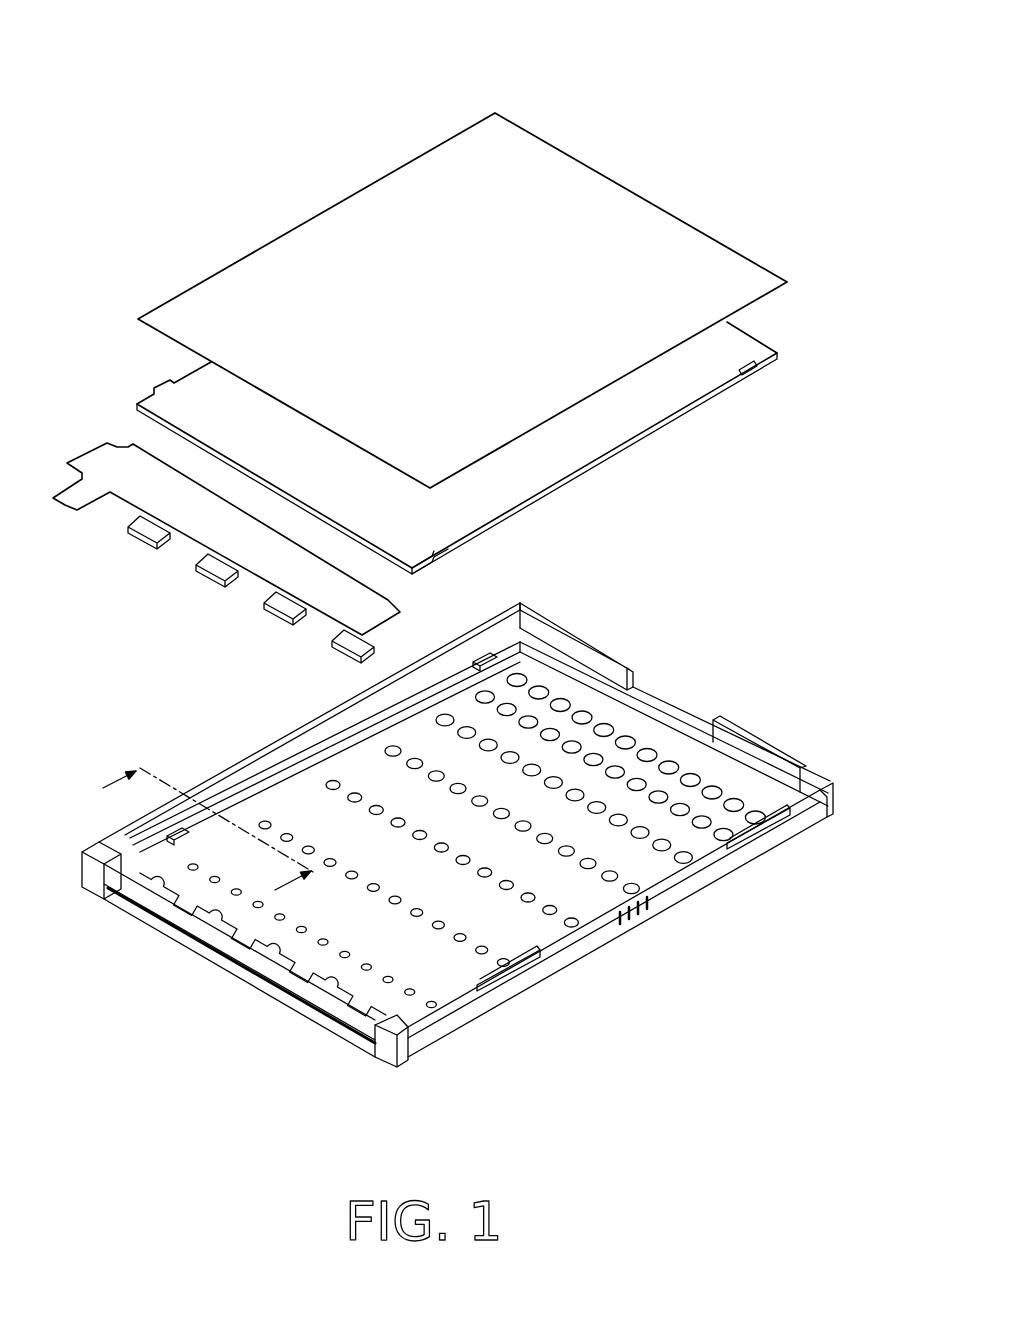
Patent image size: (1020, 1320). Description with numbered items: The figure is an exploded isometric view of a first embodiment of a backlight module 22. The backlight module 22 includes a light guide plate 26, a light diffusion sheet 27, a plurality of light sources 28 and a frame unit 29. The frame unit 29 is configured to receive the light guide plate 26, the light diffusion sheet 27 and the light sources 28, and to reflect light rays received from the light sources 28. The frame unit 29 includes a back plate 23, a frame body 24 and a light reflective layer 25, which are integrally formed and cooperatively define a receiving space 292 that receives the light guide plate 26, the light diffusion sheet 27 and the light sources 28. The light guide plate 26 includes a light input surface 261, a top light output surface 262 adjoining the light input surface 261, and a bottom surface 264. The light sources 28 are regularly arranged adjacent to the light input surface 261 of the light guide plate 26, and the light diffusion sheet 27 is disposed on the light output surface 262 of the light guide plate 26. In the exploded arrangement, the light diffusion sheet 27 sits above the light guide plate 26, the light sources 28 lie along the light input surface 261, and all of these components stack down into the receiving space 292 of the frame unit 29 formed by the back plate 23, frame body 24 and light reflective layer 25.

The backlight module 22 is at (438, 35).
The back plate 23 is at (482, 837).
The frame body 24 is at (588, 660).
The light reflective layer 25 is at (582, 880).
The light guide plate 26 is at (499, 446).
The light input surface 261 is at (412, 570).
The light output surface 262 is at (703, 380).
The bottom surface 264 is at (594, 478).
The light diffusion sheet 27 is at (575, 193).
The light sources 28 is at (217, 574).
The frame unit 29 is at (248, 1002).
The receiving space 292 is at (755, 795).